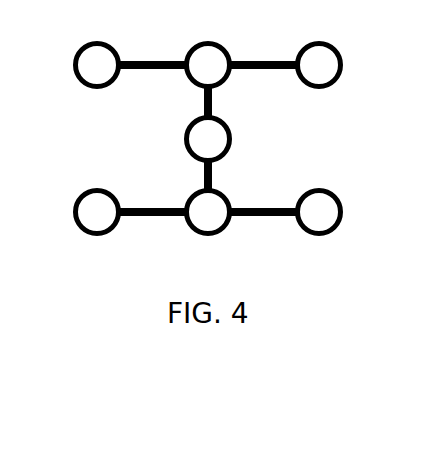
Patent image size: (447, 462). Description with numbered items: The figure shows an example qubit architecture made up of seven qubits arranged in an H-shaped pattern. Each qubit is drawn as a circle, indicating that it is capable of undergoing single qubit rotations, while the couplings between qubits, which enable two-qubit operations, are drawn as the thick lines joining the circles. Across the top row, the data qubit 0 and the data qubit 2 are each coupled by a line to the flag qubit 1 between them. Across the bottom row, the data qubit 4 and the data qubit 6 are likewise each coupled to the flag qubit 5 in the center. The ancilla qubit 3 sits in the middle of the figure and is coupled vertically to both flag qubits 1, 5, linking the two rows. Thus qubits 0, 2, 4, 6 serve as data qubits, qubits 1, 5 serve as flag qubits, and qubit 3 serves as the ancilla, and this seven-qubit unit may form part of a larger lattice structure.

The data qubit 0 is at (97, 65).
The flag qubit 1 is at (208, 65).
The data qubit 2 is at (319, 65).
The ancilla qubit 3 is at (208, 139).
The data qubit 4 is at (97, 212).
The flag qubit 5 is at (208, 212).
The data qubit 6 is at (319, 212).